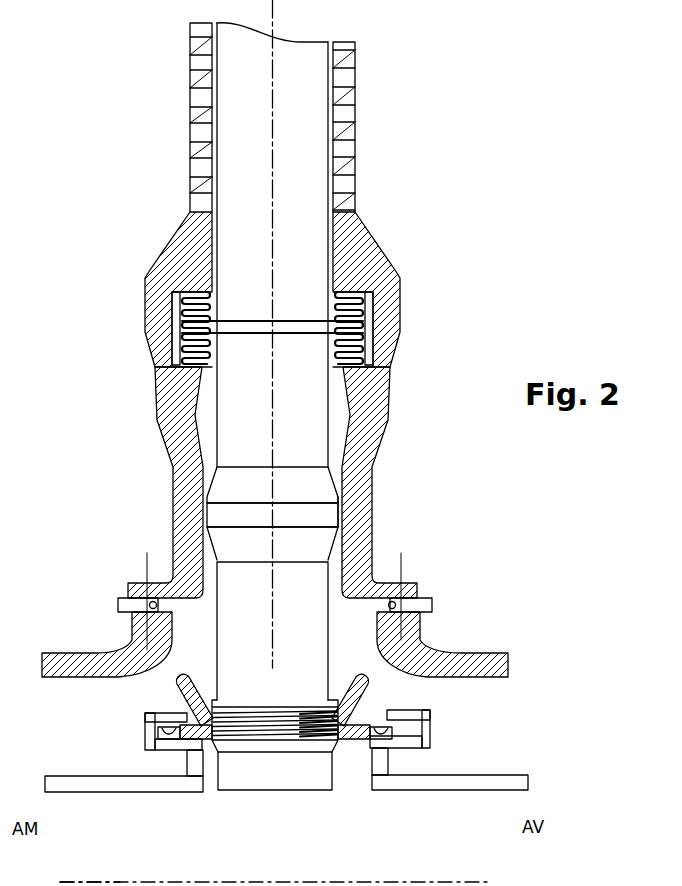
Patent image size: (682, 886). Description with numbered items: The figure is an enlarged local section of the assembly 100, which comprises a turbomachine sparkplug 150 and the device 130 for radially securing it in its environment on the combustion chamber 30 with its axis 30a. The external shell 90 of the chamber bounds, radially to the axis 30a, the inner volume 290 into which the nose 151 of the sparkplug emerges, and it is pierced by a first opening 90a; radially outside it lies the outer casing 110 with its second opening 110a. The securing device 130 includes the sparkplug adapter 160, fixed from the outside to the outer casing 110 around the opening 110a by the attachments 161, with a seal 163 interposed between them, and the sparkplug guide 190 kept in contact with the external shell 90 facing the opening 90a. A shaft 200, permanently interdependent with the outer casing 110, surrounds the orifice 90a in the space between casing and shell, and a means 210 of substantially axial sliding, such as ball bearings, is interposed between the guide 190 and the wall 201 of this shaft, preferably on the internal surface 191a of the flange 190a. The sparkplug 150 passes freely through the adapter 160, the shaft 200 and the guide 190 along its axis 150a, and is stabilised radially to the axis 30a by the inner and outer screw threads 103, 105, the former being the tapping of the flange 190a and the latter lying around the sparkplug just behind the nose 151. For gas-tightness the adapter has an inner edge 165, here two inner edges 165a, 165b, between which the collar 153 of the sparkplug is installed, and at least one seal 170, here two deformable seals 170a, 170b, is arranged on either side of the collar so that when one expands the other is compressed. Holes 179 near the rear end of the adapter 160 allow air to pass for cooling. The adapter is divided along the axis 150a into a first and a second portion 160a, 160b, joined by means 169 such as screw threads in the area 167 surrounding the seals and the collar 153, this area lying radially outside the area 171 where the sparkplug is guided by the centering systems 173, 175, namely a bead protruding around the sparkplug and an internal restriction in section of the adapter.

The assembly 100 is at (549, 587).
The axis of assembly/disassembly of the sparkplug 150a is at (272, 155).
The sparkplug adapter 160 is at (401, 407).
The holes 179 is at (200, 98).
The second portion of the sparkplug adapter 160b is at (187, 230).
The inner edge 165a is at (197, 287).
The deformable seal 170a is at (352, 293).
The inner edge 165b is at (187, 380).
The first portion of the sparkplug adapter 160a is at (185, 497).
The inner edge 165 is at (388, 392).
The area surrounding the seals and the collar 167 is at (177, 305).
The deformable seal 170b is at (378, 333).
The collar 153 is at (190, 326).
The means ensuring mutual releasable attachment 169 is at (388, 313).
The seal 170 is at (176, 316).
The turbomachine sparkplug 150 is at (305, 596).
The centering means on the sparkplug 173 is at (340, 515).
The centering system of the sparkplug adapter 175 is at (355, 503).
The area where the sparkplug is guided 171 is at (405, 483).
The outer screw thread 105 is at (318, 717).
The inner screw thread 103 is at (330, 753).
The nose of the sparkplug 151 is at (250, 778).
The sparkplug guide 190 is at (395, 700).
The flange of the sparkplug guide 190a is at (357, 740).
The attachments 161 is at (146, 573).
The seal 163 is at (427, 603).
The outer casing 110 is at (485, 656).
The second opening 110a is at (170, 660).
The device for radially securing the sparkplug 130 is at (133, 688).
The combustion chamber 30 is at (561, 797).
The shaft 200 is at (440, 724).
The bracket lower bar 191a is at (395, 733).
The wall of the shaft 201 is at (162, 746).
The means of substantially axial sliding 210 is at (160, 732).
The external shell 90 is at (503, 780).
The first opening 90a is at (212, 785).
The axis of the combustion chamber 30a is at (332, 862).
The inner volume of the combustion chamber 290 is at (90, 856).